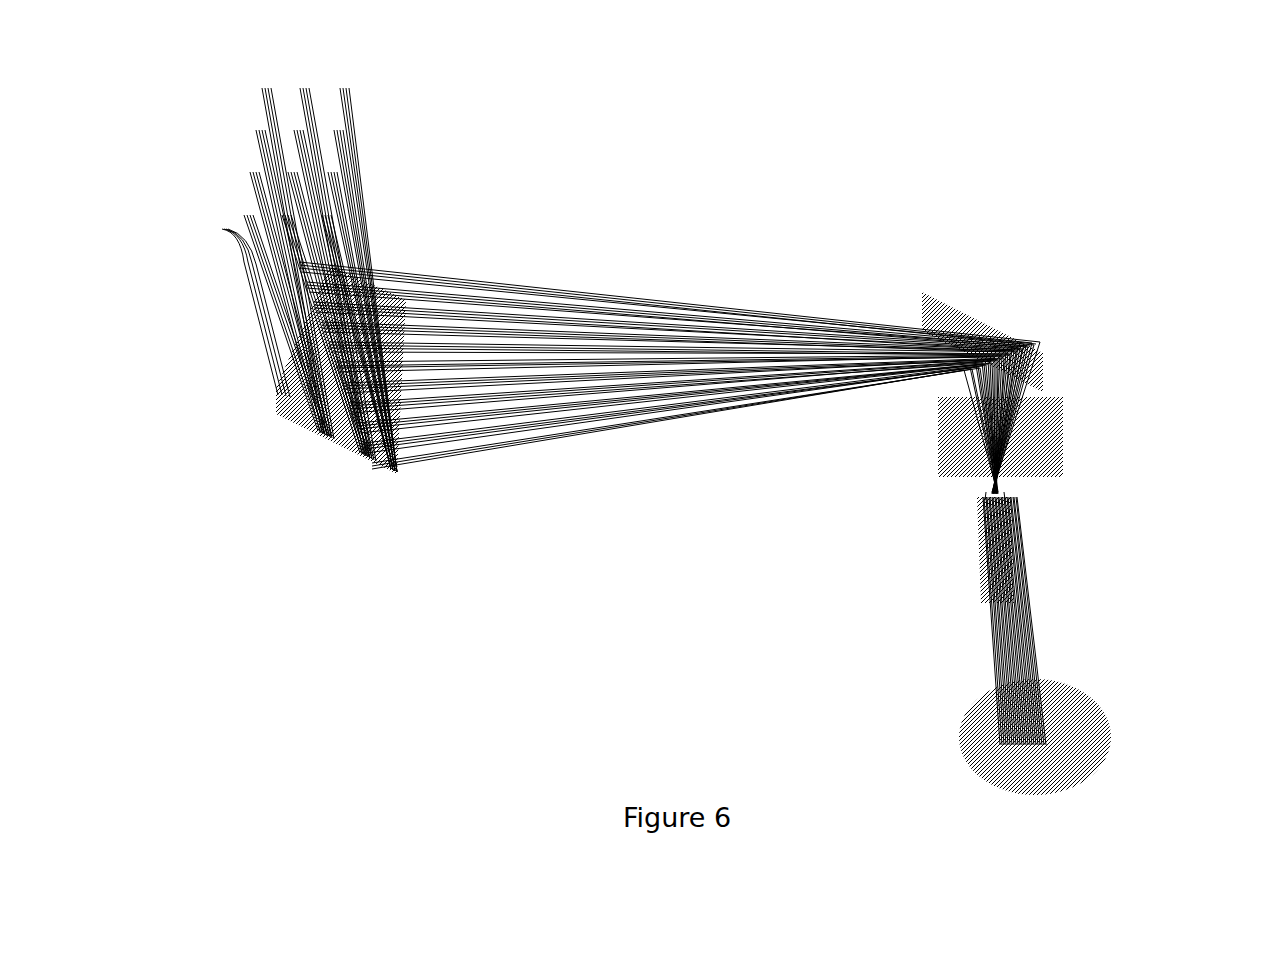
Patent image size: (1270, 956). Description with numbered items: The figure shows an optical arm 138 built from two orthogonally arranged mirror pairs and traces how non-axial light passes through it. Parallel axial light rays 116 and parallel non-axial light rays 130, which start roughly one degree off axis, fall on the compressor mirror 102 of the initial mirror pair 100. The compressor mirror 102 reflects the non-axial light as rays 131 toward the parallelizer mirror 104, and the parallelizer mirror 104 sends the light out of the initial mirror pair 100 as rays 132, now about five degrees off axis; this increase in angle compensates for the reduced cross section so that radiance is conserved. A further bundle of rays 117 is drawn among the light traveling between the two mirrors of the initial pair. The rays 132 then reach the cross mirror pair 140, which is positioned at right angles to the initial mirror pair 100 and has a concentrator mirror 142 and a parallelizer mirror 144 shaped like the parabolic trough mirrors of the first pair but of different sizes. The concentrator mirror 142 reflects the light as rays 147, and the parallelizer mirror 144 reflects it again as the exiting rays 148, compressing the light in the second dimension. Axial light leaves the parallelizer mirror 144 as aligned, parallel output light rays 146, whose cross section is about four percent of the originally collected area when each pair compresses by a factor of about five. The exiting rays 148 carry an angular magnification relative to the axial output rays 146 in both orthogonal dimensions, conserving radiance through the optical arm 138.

The initial mirror pair 100 is at (1062, 103).
The compressor mirror 102 is at (345, 455).
The parallelizer mirror 104 is at (965, 308).
The parallel axial light rays 116 is at (254, 220).
The rays 117 is at (708, 308).
The parallel non-axial light rays 130 is at (230, 229).
The rays 131 is at (658, 290).
The rays 132 is at (1050, 384).
The optical arm 138 is at (1191, 122).
The cross mirror pair 140 is at (1070, 610).
The concentrator mirror 142 is at (933, 473).
The parallelizer mirror 144 is at (973, 565).
The output light rays 146 is at (1042, 753).
The rays 147 is at (960, 497).
The exiting rays 148 is at (990, 672).